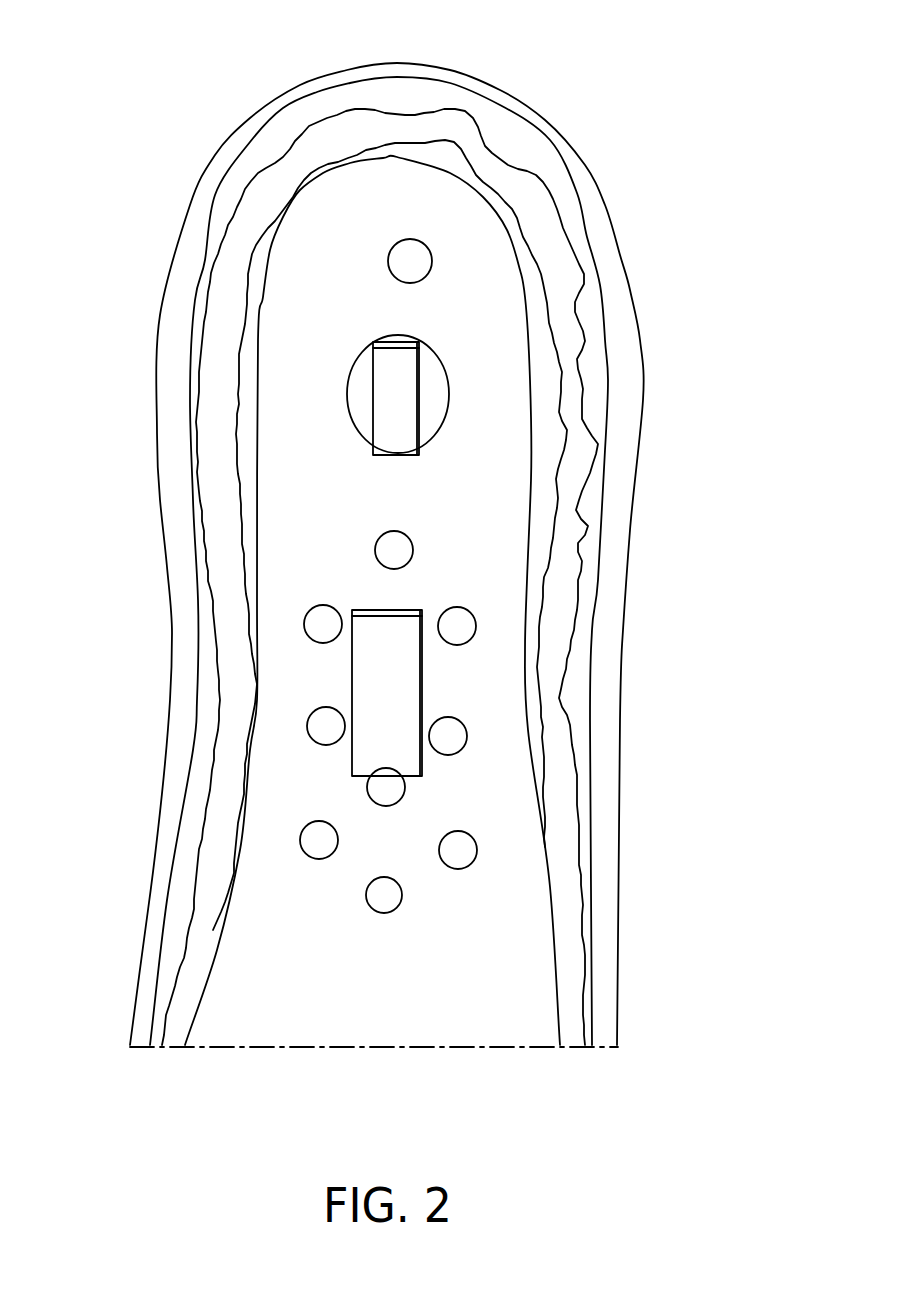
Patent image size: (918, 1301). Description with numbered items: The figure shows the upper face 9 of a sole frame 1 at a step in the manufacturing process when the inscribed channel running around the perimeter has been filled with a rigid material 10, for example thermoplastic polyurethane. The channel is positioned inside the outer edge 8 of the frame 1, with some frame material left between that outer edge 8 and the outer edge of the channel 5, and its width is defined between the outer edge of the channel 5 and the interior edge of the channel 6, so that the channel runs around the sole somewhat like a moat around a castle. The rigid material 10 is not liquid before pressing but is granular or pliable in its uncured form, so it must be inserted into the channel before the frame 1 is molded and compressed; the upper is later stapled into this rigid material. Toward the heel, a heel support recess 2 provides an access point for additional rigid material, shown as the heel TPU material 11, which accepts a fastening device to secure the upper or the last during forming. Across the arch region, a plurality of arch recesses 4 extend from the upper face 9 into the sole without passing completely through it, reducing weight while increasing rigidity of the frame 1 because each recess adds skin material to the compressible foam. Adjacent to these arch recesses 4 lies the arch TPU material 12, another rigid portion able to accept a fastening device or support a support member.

The frame 1 is at (147, 752).
The heel support recess 2 is at (432, 362).
The arch recesses 4 is at (478, 627).
The outer edge of the channel 5 is at (217, 213).
The interior edge of the channel 6 is at (340, 167).
The outer edge 8 is at (157, 433).
The upper face 9 is at (290, 977).
The rigid material 10 is at (527, 193).
The heel TPU material 11 is at (398, 397).
The arch TPU material 12 is at (385, 679).